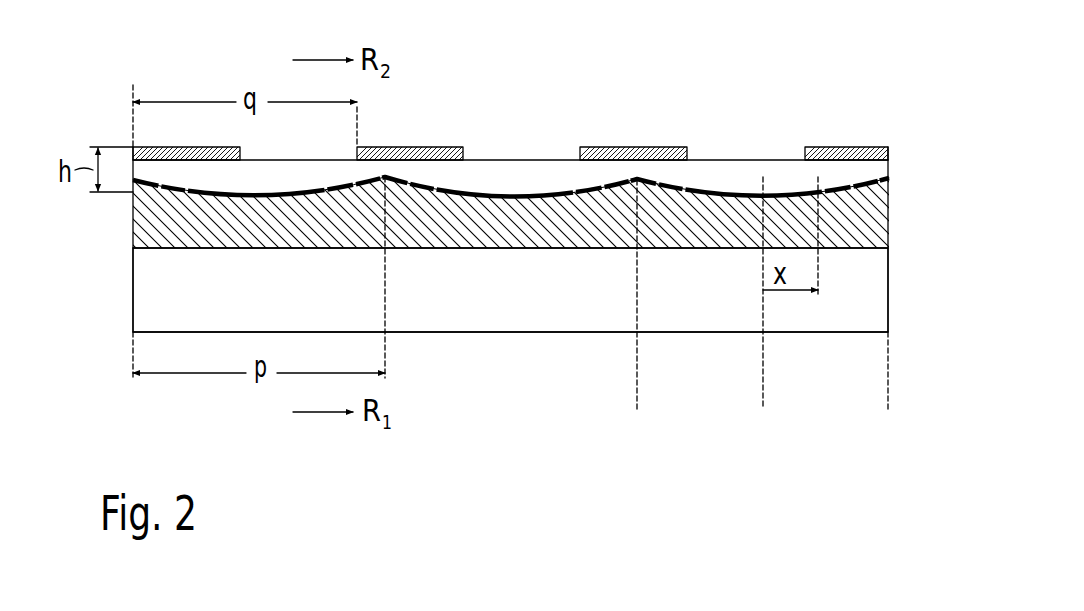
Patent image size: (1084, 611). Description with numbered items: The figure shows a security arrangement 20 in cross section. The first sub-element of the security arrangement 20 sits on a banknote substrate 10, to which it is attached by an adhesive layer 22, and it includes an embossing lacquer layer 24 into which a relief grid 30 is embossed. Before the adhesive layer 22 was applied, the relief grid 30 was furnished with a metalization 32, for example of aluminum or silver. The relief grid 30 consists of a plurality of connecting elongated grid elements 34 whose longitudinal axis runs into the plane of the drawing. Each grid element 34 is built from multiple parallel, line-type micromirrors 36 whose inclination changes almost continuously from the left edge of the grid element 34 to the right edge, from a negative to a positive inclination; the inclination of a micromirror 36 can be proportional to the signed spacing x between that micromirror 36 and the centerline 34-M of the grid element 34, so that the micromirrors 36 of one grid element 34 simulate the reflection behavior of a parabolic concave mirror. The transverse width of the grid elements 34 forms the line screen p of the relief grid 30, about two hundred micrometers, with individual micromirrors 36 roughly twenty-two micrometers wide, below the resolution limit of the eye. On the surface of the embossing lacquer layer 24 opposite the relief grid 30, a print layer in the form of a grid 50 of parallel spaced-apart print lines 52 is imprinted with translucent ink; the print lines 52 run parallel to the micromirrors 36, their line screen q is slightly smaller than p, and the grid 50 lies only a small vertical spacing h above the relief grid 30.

The banknote substrate 10 is at (143, 292).
The security arrangement 20 is at (123, 92).
The adhesive layer 22 is at (140, 223).
The embossing lacquer layer 24 is at (880, 168).
The relief grid 30 is at (498, 216).
The metalization 32 is at (518, 192).
The grid element 34 is at (382, 257).
The centerline 34-M is at (765, 372).
The micromirrors 36 is at (452, 190).
The grid of print lines 50 is at (864, 147).
The print lines 52 is at (637, 147).